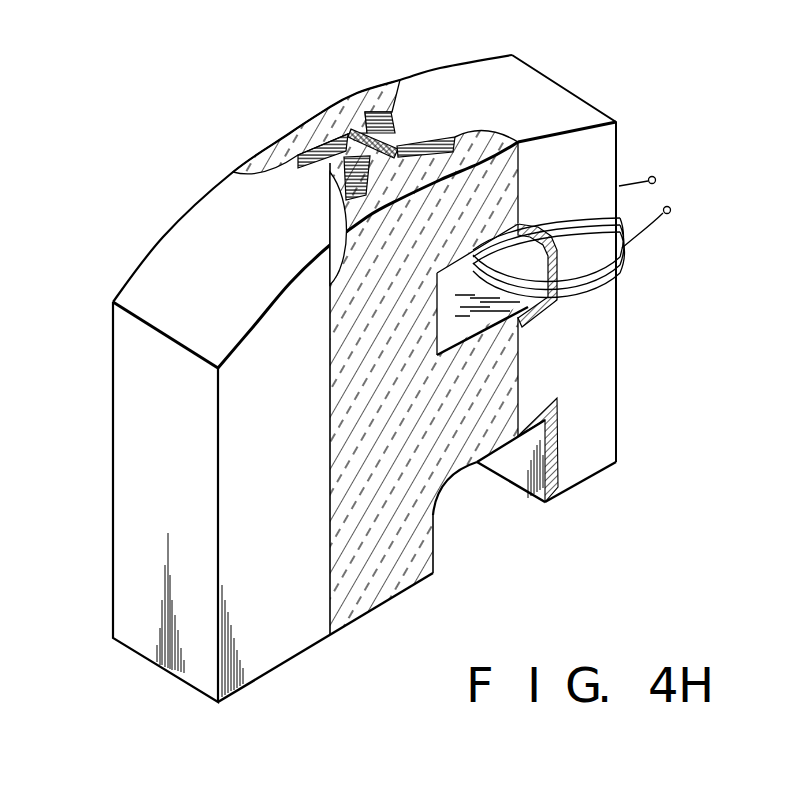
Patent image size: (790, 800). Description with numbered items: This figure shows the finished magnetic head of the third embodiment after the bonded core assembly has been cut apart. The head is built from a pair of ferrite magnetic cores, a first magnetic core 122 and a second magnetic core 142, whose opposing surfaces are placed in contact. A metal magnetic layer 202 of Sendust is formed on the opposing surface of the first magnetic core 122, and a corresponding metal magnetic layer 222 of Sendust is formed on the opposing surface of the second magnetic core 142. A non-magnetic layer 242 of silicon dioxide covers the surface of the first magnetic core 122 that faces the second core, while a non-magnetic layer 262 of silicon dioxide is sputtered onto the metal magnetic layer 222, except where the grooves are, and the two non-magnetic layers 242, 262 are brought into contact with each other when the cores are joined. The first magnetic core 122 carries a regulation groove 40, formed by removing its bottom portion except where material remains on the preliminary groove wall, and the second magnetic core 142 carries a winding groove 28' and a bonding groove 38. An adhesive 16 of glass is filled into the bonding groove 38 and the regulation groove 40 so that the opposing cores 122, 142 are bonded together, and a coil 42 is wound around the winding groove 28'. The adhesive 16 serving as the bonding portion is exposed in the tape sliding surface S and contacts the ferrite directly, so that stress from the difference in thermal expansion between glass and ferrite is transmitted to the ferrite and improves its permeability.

The tape sliding surface S is at (158, 268).
The adhesive 16 is at (288, 134).
The regulation groove 40 is at (412, 102).
The coil 42 is at (628, 250).
The bonding groove 38 is at (560, 475).
The winding groove 28' is at (515, 293).
The magnetic core 122 is at (173, 250).
The magnetic core 142 is at (574, 110).
The metal magnetic layer 202 is at (340, 160).
The metal magnetic layer 222 is at (394, 143).
The non-magnetic layer 242 is at (330, 300).
The non-magnetic layer 262 is at (350, 130).